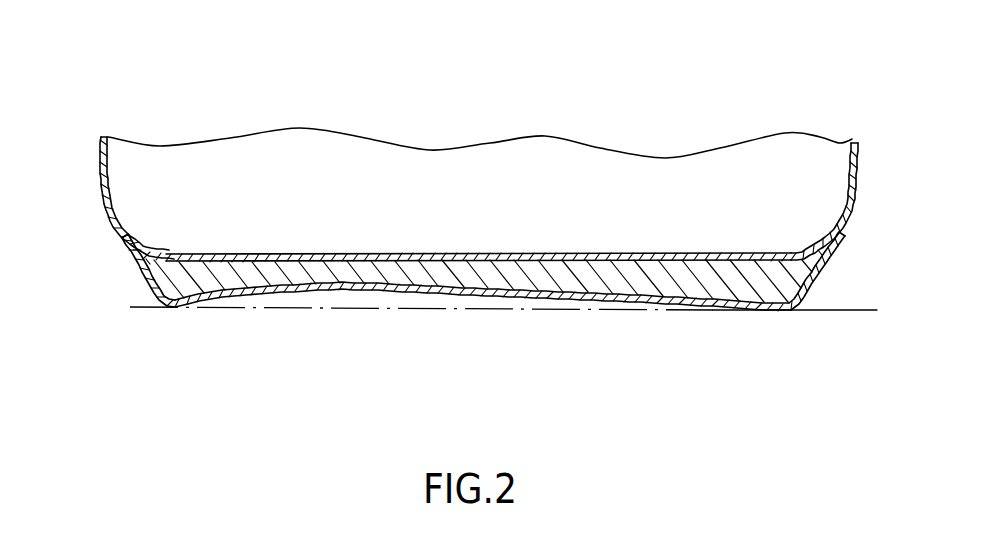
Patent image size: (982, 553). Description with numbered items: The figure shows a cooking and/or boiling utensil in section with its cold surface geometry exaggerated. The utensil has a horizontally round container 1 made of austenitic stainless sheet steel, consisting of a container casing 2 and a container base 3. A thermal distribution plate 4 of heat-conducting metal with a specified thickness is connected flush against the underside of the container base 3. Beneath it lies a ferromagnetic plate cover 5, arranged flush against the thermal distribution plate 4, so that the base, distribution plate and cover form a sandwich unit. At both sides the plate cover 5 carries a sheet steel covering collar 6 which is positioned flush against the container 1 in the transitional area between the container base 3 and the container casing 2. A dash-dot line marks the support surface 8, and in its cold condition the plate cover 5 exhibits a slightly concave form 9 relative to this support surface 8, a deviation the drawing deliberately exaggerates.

The container 1 is at (588, 106).
The container casing 2 is at (849, 200).
The container base 3 is at (699, 252).
The thermal distribution plate 4 is at (645, 274).
The plate cover 5 is at (705, 320).
The covering collar 6 is at (128, 262).
The support surface 8 is at (445, 309).
The concave form 9 is at (505, 293).